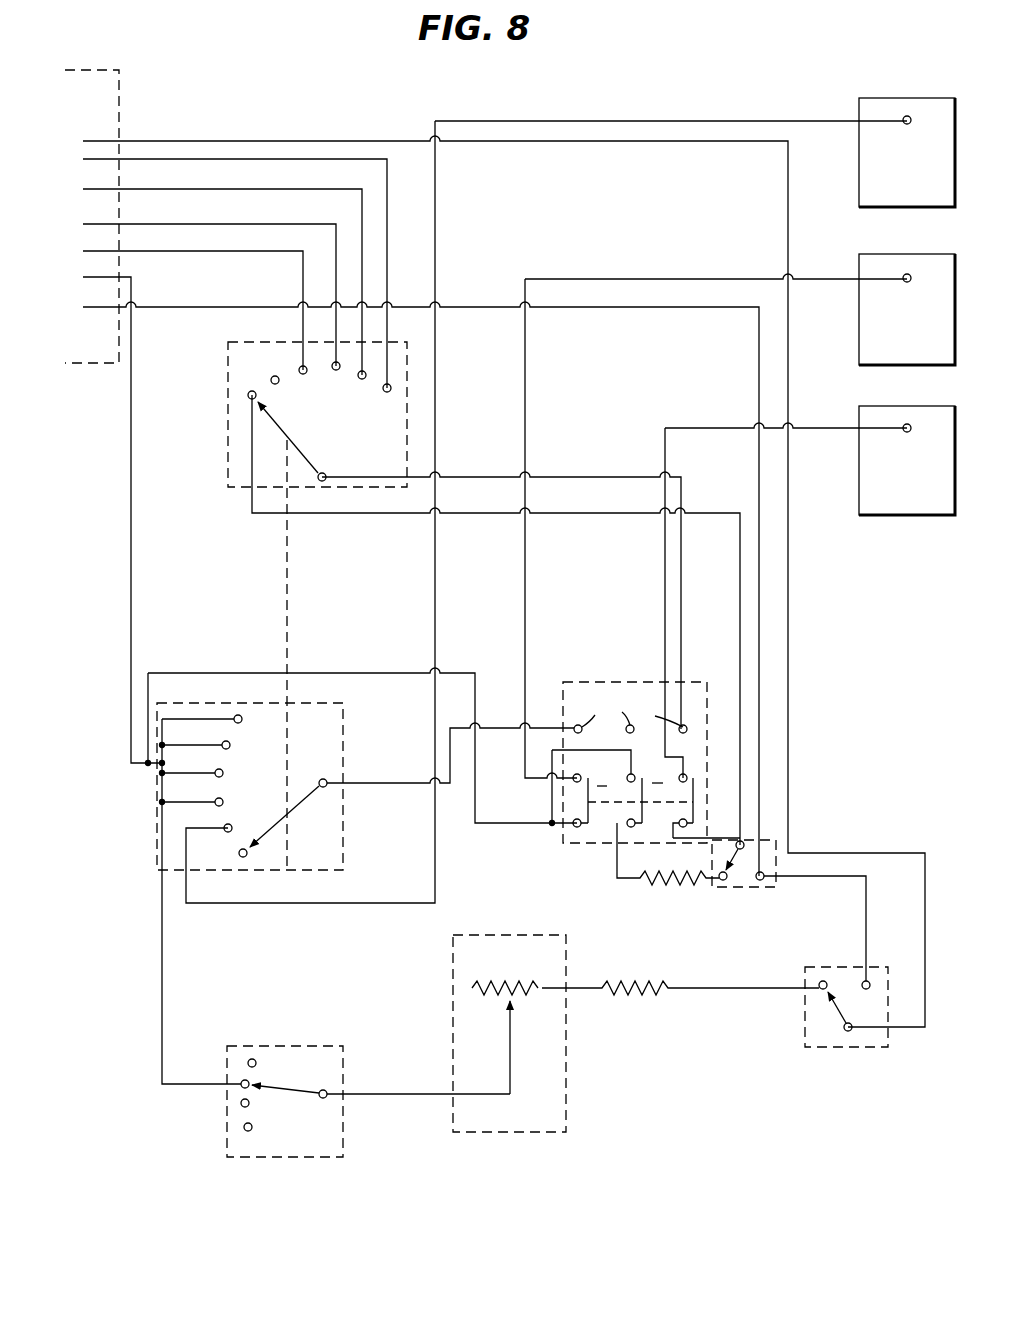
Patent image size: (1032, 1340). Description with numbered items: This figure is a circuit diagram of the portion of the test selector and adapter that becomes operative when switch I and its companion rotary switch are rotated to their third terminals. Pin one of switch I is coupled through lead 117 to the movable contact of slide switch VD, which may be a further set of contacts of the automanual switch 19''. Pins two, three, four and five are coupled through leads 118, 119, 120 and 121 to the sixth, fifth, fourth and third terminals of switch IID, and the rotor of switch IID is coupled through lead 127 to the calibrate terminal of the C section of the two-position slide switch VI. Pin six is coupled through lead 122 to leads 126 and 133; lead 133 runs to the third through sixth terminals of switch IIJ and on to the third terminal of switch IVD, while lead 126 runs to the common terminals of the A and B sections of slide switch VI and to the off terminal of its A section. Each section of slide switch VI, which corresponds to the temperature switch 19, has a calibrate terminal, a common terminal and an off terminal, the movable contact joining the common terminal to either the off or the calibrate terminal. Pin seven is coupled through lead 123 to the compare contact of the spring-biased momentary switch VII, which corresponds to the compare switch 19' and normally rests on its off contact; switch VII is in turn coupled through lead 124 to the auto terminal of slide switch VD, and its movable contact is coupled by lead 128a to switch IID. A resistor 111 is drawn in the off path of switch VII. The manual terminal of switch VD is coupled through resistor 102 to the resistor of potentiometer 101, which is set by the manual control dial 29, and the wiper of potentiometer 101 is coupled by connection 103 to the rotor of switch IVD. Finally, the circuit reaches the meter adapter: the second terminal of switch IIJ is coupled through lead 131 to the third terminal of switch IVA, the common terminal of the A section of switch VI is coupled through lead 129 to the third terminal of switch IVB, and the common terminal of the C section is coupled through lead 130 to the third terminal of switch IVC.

The switch I is at (111, 68).
The lead 117 is at (266, 140).
The lead 118 is at (385, 168).
The lead 119 is at (360, 190).
The lead 120 is at (337, 225).
The lead 121 is at (305, 252).
The lead 122 is at (131, 578).
The lead 123 is at (405, 306).
The lead 124 is at (866, 941).
The lead 126 is at (226, 673).
The lead 127 is at (497, 478).
The lead 128a is at (588, 515).
The lead 129 is at (525, 618).
The lead 130 is at (665, 598).
The lead 131 is at (624, 118).
The lead 133 is at (163, 981).
The switch IVA is at (878, 98).
The switch IVB is at (924, 238).
The switch IVC is at (917, 390).
The switch IVD is at (300, 1050).
The switch IID is at (240, 453).
The switch IIJ is at (330, 710).
The slide switch VD is at (806, 1038).
The two-position slide switch VI is at (714, 676).
The spring-biased two-position switch VII is at (770, 840).
The temperature switch 19 is at (629, 749).
The compare switch 19' is at (804, 863).
The automanual switch 19'' is at (862, 1065).
The manual control dial 29 is at (532, 1136).
The potentiometer 101 is at (527, 990).
The resistor 102 is at (650, 990).
The conductor 103 is at (421, 1090).
The resistor 111 is at (667, 888).